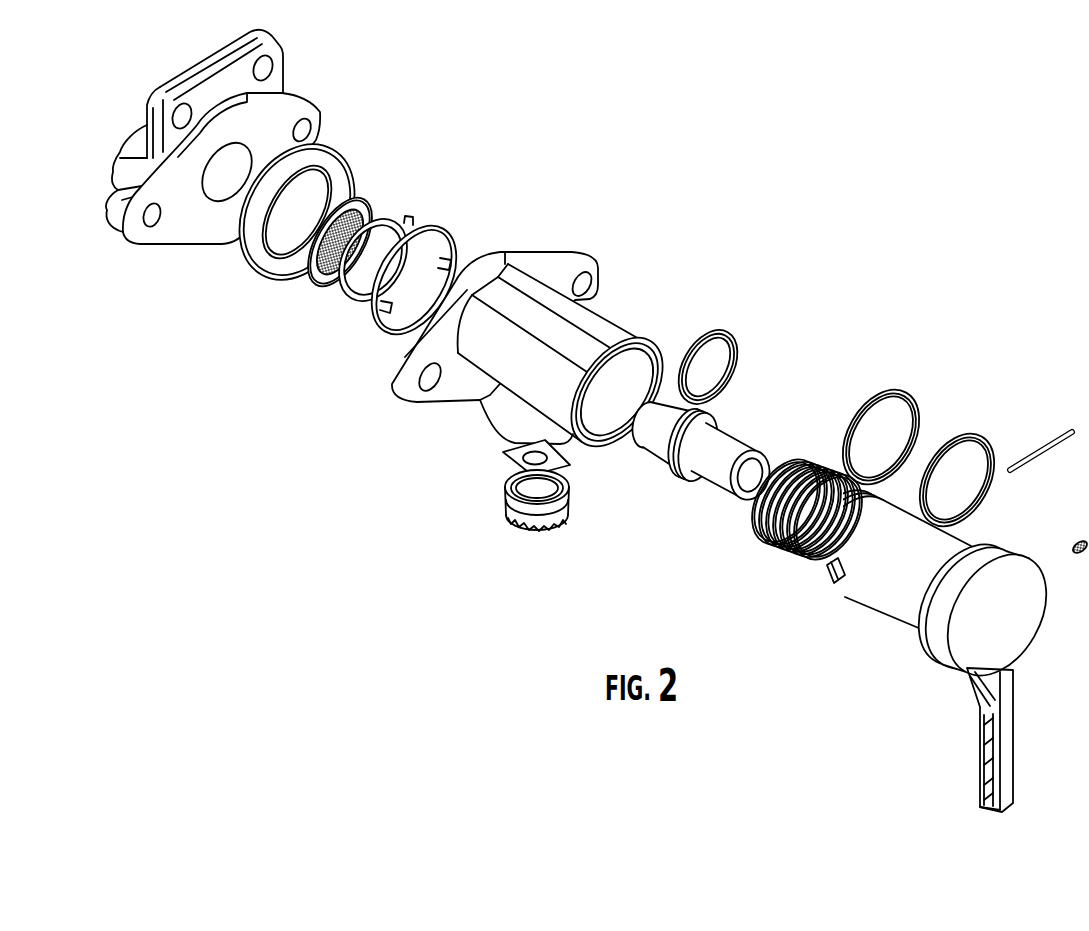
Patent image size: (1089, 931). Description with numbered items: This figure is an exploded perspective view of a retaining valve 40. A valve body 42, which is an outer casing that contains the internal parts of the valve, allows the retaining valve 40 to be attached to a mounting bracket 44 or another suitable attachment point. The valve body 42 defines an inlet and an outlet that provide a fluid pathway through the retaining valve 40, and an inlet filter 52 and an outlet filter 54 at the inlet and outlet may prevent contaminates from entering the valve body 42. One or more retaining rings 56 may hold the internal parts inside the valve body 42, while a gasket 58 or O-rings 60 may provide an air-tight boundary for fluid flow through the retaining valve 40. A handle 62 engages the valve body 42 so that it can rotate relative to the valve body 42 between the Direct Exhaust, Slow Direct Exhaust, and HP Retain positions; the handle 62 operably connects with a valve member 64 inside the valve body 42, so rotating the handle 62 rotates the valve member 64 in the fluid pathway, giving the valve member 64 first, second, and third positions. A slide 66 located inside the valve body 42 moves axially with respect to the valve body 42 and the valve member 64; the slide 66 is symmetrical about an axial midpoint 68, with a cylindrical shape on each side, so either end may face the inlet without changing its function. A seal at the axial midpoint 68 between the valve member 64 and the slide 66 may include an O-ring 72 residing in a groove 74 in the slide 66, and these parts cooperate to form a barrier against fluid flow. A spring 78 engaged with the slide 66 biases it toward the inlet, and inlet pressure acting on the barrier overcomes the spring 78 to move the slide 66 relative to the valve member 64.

The retaining valve 40 is at (395, 706).
The valve body 42 is at (490, 412).
The mounting bracket 44 is at (137, 242).
The inlet filter 52 is at (359, 200).
The outlet filter 54 is at (533, 534).
The retaining ring 56 is at (431, 230).
The gasket 58 is at (328, 157).
The O-rings 60 is at (980, 437).
The handle 62 is at (1016, 741).
The valve member 64 is at (874, 610).
The slide 66 is at (720, 490).
The axial midpoint 68 is at (702, 458).
The O-ring 72 is at (729, 335).
The groove 74 is at (670, 472).
The spring 78 is at (790, 542).